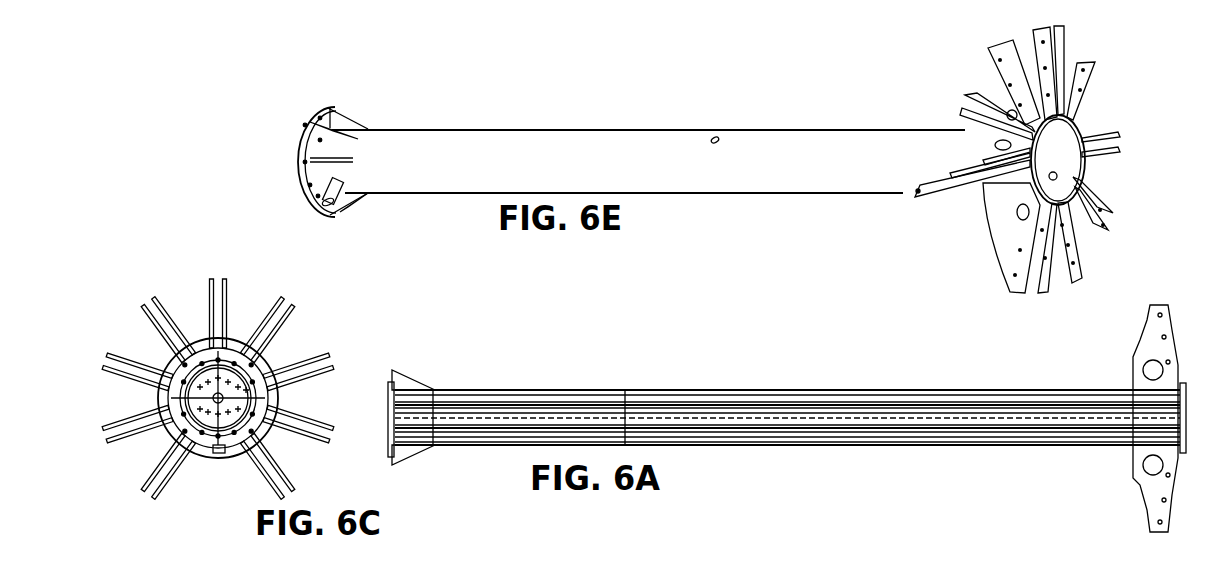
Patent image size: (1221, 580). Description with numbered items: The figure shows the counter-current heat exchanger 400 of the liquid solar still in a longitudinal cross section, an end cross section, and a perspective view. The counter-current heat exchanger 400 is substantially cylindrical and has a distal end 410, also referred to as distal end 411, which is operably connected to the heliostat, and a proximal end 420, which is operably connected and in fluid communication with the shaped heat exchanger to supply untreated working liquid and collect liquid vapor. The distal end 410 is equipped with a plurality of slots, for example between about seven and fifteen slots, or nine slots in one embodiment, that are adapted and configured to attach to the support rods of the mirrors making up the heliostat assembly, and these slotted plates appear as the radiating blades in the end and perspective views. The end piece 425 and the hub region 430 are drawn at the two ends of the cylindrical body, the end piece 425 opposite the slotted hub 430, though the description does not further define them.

In FIG. 6E, the counter-current heat exchanger 400 is at (646, 138).
In FIG. 6E, the distal end 410 is at (965, 96).
In FIG. 6C, the distal end 411 is at (160, 313).
In FIG. 6A, the proximal end 420 is at (455, 400).
In FIG. 6E, the end cap 425 is at (307, 143).
In FIG. 6C, the hub plate 430 is at (205, 422).